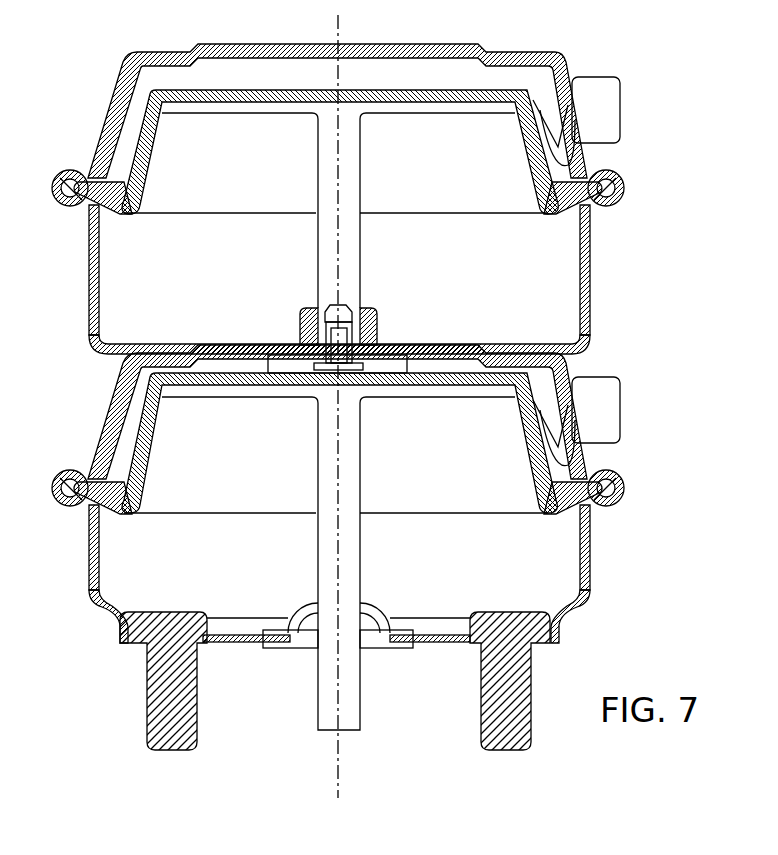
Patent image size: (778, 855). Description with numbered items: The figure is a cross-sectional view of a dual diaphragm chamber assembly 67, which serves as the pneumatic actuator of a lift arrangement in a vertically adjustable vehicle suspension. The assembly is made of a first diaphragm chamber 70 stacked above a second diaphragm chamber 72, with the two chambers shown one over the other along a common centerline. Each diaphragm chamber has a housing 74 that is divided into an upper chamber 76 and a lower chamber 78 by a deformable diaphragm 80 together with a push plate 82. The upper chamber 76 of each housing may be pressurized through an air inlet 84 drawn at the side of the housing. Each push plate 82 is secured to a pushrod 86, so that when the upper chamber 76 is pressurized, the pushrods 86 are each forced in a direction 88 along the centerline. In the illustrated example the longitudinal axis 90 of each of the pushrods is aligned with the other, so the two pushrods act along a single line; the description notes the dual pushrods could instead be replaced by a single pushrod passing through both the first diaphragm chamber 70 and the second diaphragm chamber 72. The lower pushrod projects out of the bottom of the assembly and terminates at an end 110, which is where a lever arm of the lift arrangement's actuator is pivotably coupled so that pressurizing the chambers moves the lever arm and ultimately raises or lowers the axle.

The dual diaphragm chamber assembly 67 is at (388, 375).
The first diaphragm chamber 70 is at (629, 172).
The second diaphragm chamber 72 is at (630, 479).
The housing 74 is at (592, 238).
The upper chamber 76 is at (162, 75).
The lower chamber 78 is at (567, 304).
The deformable diaphragm 80 is at (537, 133).
The push plate 82 is at (457, 103).
The air inlet 84 is at (592, 87).
The pushrod 86 is at (350, 247).
The direction 88 is at (338, 773).
The longitudinal axis 90 is at (341, 140).
The end of the pushrod 110 is at (360, 695).